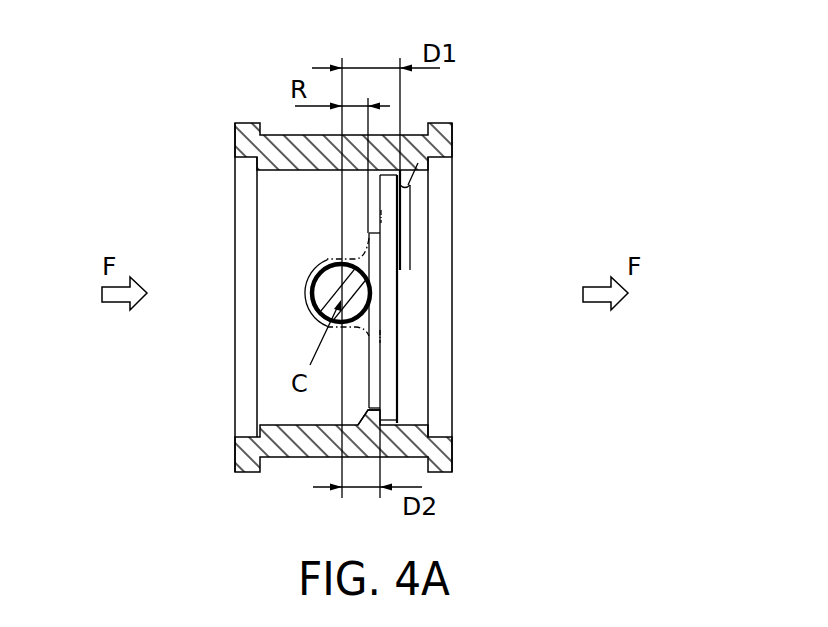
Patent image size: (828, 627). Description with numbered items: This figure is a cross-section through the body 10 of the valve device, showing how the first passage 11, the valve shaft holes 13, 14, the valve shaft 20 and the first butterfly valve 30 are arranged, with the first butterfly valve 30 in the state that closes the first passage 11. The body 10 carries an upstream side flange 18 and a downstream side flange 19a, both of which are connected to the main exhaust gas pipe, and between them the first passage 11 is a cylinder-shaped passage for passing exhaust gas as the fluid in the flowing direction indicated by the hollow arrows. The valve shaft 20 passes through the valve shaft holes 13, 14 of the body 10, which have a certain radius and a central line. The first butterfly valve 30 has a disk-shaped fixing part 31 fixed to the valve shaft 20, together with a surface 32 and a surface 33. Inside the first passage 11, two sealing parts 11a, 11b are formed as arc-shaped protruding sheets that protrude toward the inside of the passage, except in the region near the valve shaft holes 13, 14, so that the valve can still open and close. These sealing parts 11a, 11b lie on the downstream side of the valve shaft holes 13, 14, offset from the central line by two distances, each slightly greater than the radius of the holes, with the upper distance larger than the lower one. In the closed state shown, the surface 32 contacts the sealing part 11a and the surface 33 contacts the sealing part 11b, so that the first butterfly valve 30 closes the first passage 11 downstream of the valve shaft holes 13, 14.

The body 10 is at (349, 241).
The upstream side flange 18 is at (233, 143).
The downstream side flange 19a is at (453, 434).
The first passage 11 is at (368, 297).
The sealing part 11a is at (403, 186).
The sealing part 11b is at (374, 404).
The first butterfly valve 30 is at (461, 299).
The surface 32 is at (400, 219).
The surface 33 is at (376, 370).
The fixing part 31 is at (318, 262).
The valve shaft 20 is at (267, 335).
The valve shaft hole 14 is at (330, 308).
The valve shaft hole 13 is at (312, 287).